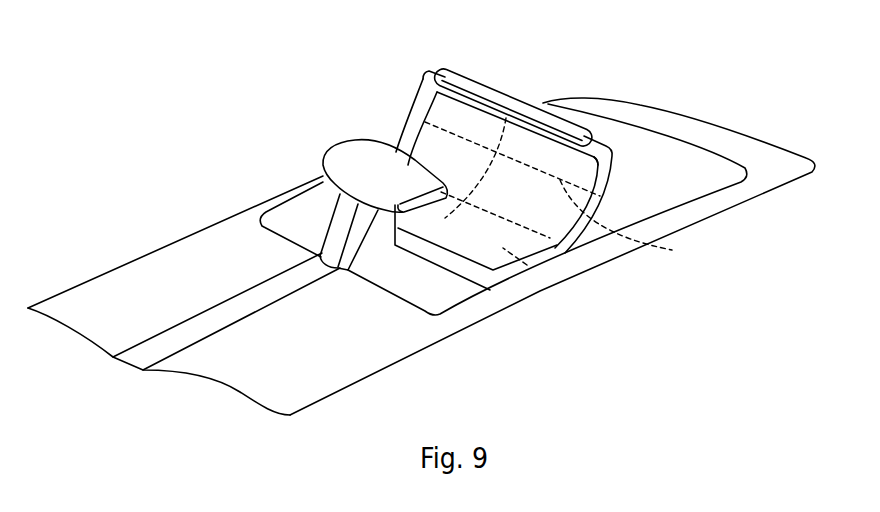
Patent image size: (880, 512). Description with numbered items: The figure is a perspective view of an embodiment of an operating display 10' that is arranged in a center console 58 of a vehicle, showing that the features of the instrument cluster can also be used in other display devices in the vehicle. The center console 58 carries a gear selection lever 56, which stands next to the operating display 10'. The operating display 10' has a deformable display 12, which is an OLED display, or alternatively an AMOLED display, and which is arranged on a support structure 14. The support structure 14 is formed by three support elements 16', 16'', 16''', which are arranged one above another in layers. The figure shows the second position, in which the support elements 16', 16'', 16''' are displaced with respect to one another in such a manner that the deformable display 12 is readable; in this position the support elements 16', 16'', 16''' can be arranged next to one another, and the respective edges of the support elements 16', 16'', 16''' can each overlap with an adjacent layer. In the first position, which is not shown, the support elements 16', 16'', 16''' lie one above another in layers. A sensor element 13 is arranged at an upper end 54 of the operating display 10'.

The operating display 10' is at (474, 156).
The deformable display 12 is at (423, 146).
The sensor element 13 is at (491, 88).
The support structure 14 is at (578, 239).
The first support element 16' is at (566, 168).
The second support element 16'' is at (633, 221).
The third support element 16''' is at (553, 302).
The upper end 54 is at (593, 152).
The gear selection lever 56 is at (347, 152).
The center console 58 is at (230, 228).